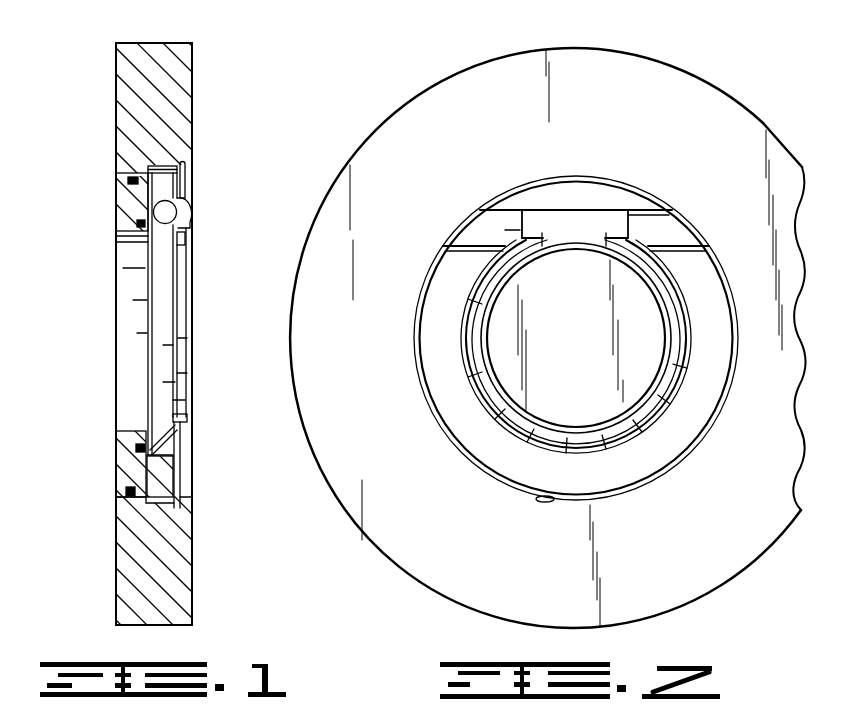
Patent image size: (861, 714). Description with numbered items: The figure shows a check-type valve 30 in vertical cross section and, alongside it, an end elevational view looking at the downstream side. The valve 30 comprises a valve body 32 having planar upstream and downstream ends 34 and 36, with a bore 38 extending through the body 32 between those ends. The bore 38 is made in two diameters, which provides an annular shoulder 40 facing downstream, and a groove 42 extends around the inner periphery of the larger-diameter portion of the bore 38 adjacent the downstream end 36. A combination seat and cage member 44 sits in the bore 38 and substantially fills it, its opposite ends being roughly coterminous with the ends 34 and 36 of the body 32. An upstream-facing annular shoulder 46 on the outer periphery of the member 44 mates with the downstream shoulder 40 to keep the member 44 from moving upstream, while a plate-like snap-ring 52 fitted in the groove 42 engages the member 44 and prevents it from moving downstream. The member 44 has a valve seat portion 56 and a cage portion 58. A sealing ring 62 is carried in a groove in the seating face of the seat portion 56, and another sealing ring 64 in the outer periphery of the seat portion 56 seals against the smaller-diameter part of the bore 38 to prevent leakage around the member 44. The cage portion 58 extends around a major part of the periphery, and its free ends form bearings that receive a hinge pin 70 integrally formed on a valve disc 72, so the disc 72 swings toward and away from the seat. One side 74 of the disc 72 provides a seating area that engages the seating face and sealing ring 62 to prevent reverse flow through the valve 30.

In FIG. 1, the valve 30 is at (112, 40).
In FIG. 2, the valve 30 is at (490, 50).
In FIG. 1, the valve body 32 is at (160, 55).
In FIG. 2, the valve body 32 is at (660, 48).
In FIG. 1, the upstream end 34 is at (116, 87).
In FIG. 1, the downstream end 36 is at (192, 70).
In FIG. 2, the downstream end 36 is at (440, 112).
In FIG. 1, the bore 38 is at (163, 165).
In FIG. 2, the bore 38 is at (545, 500).
In FIG. 1, the annular shoulder 40 is at (140, 173).
In FIG. 1, the groove 42 is at (182, 183).
In FIG. 1, the combination seat and cage member 44 is at (106, 199).
In FIG. 1, the annular shoulder 46 is at (152, 505).
In FIG. 1, the snap-ring 52 is at (181, 500).
In FIG. 2, the snap-ring 52 is at (415, 322).
In FIG. 1, the valve seat portion 56 is at (124, 460).
In FIG. 1, the cage portion 58 is at (160, 480).
In FIG. 2, the cage portion 58 is at (655, 450).
In FIG. 1, the sealing ring 62 is at (130, 432).
In FIG. 1, the sealing ring 64 is at (128, 490).
In FIG. 1, the hinge pin 70 is at (166, 212).
In FIG. 2, the hinge pin 70 is at (536, 222).
In FIG. 1, the valve disc 72 is at (176, 303).
In FIG. 2, the valve disc 72 is at (594, 377).
In FIG. 1, the side of the disc 74 is at (147, 315).